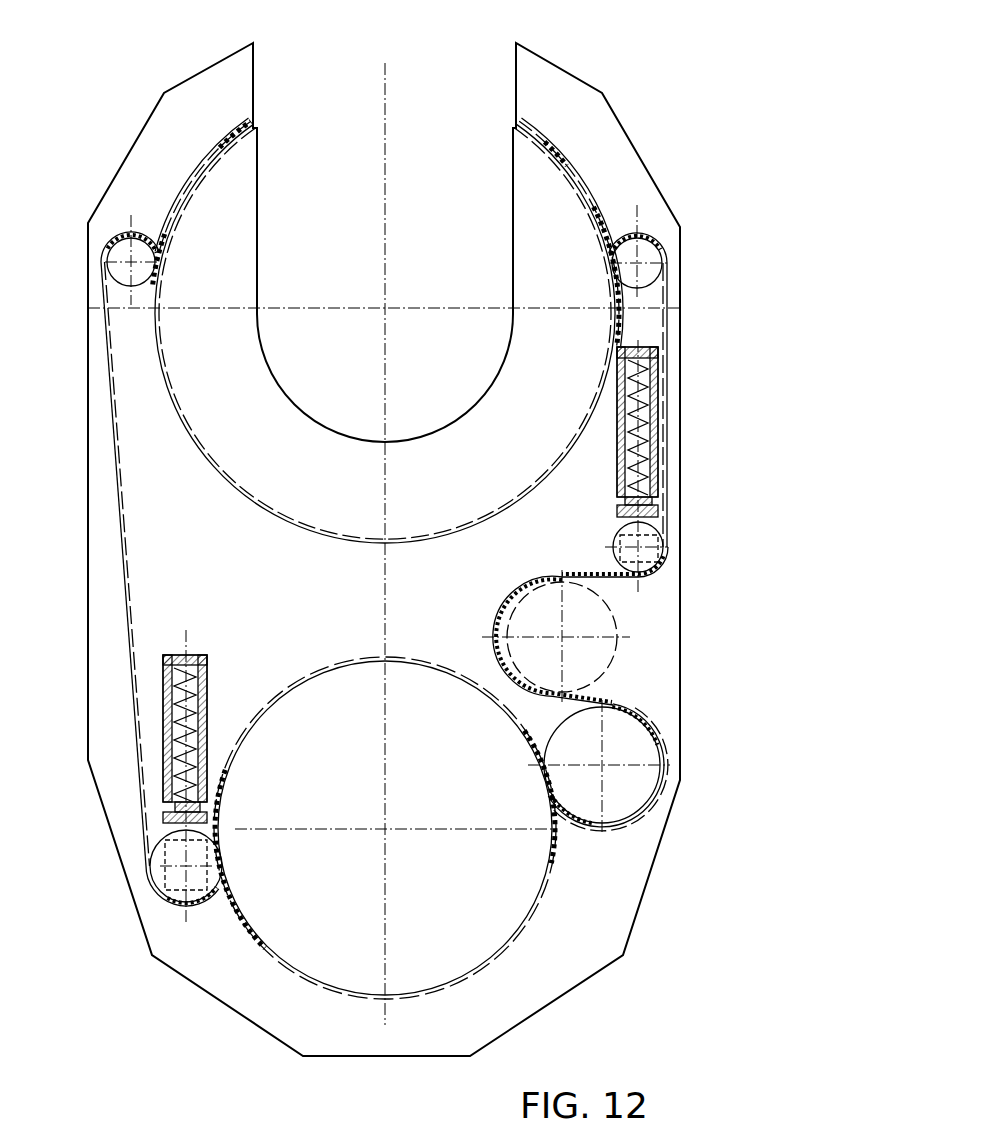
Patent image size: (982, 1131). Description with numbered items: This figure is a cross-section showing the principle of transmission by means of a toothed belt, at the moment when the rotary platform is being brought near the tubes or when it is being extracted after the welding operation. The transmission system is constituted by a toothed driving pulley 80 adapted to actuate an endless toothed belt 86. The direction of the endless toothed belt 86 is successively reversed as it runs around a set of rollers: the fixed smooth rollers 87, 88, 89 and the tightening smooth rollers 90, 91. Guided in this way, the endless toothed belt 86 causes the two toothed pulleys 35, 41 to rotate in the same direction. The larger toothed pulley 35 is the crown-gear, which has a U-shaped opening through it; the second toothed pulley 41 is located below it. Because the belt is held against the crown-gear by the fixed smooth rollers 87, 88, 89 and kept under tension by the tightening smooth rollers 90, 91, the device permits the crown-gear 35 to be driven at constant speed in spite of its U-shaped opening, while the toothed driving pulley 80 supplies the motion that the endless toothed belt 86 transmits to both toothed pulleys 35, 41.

The toothed pulley (crown-gear) 35 is at (530, 153).
The toothed pulley 41 is at (257, 912).
The endless toothed belt 86 is at (602, 576).
The fixed smooth roller 87 is at (118, 257).
The fixed smooth roller 88 is at (646, 250).
The fixed smooth roller 89 is at (640, 775).
The toothed driving pulley 80 is at (590, 620).
The tightening smooth roller 90 is at (152, 858).
The tightening smooth roller 91 is at (648, 538).